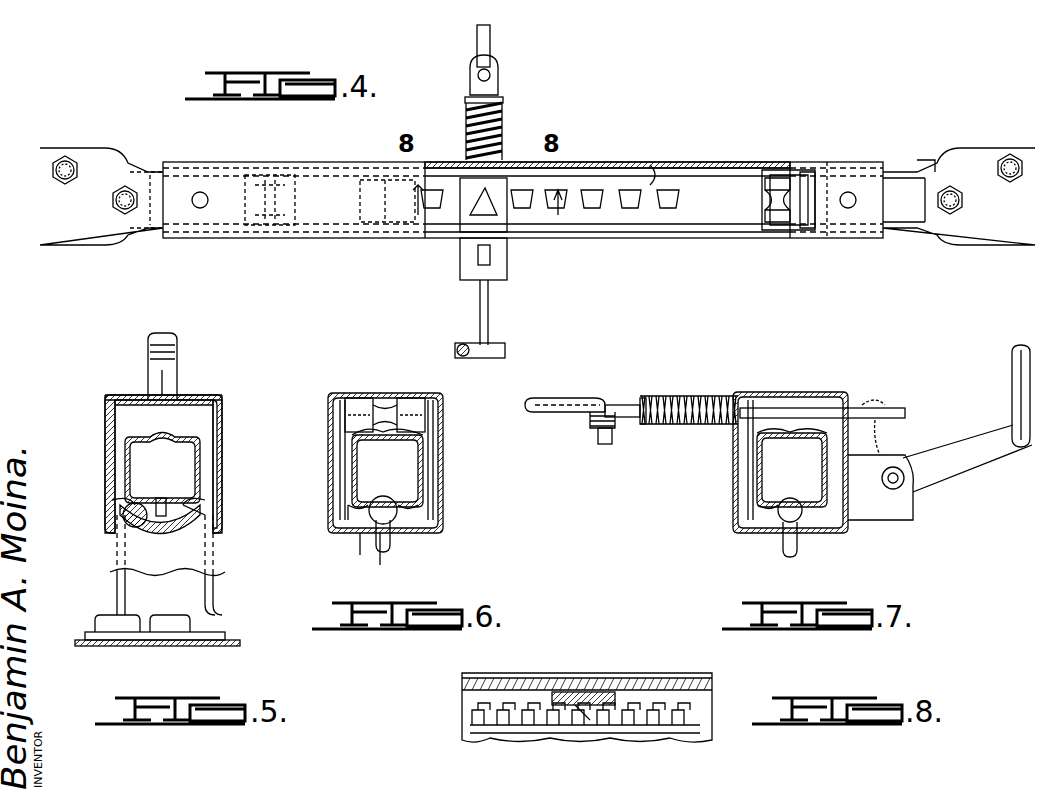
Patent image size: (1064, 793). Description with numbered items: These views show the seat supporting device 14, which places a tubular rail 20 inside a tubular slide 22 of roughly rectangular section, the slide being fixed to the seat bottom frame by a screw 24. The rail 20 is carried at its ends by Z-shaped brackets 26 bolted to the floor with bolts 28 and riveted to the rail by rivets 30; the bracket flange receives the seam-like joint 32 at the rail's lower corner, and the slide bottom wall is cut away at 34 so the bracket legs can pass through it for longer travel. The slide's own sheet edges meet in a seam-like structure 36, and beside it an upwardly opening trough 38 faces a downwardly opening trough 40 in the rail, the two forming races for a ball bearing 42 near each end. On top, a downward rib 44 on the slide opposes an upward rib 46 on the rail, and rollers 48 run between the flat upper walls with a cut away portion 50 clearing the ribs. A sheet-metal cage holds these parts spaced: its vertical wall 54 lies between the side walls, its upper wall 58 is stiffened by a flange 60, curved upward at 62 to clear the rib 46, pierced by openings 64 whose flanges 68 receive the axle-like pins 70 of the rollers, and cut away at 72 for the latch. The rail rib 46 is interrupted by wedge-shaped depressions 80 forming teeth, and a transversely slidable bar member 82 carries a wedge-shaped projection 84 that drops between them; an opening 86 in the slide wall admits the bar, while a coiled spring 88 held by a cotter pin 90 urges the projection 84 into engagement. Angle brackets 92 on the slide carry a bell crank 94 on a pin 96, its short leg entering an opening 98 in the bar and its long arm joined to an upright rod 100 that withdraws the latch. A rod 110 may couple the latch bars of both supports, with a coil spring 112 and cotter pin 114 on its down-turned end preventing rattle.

In FIG. 4, the supporting device 14 is at (159, 265).
In FIG. 4, the rail 20 is at (600, 180).
In FIG. 5, the rail 20 is at (212, 462).
In FIG. 6, the rail 20 is at (435, 474).
In FIG. 7, the rail 20 is at (805, 510).
In FIG. 4, the slide 22 is at (222, 240).
In FIG. 5, the slide 22 is at (222, 408).
In FIG. 6, the slide 22 is at (322, 412).
In FIG. 7, the slide 22 is at (828, 540).
In FIG. 8, the slide 22 is at (460, 668).
In FIG. 4, the screw 24 is at (205, 195).
In FIG. 5, the screw 24 is at (178, 355).
In FIG. 4, the bracket 26 is at (105, 240).
In FIG. 5, the bracket 26 is at (118, 580).
In FIG. 4, the bolt 28 is at (110, 205).
In FIG. 5, the rivet 30 is at (148, 522).
In FIG. 5, the seam-like joint 32 is at (118, 508).
In FIG. 6, the seam-like joint 32 is at (348, 510).
In FIG. 5, the cut away portion 34 is at (208, 535).
In FIG. 6, the seam-like structure 36 is at (360, 548).
In FIG. 7, the seam-like structure 36 is at (792, 558).
In FIG. 6, the trough or groove 38 is at (392, 540).
In FIG. 7, the trough or groove 38 is at (782, 511).
In FIG. 6, the groove or trough 40 is at (383, 496).
In FIG. 7, the groove or trough 40 is at (795, 488).
In FIG. 4, the ball bearing 42 is at (375, 240).
In FIG. 6, the ball bearing 42 is at (400, 508).
In FIG. 6, the rib or bead 44 is at (378, 398).
In FIG. 7, the rib or bead 44 is at (785, 398).
In FIG. 8, the rib or bead 44 is at (710, 675).
In FIG. 4, the bead or rib 46 is at (620, 185).
In FIG. 6, the bead or rib 46 is at (352, 455).
In FIG. 8, the bead or rib 46 is at (688, 705).
In FIG. 4, the roller 48 is at (310, 240).
In FIG. 6, the roller 48 is at (410, 398).
In FIG. 6, the cut away portion 50 is at (380, 403).
In FIG. 6, the vertical wall 54 is at (345, 478).
In FIG. 4, the horizontally extending wall portion 58 is at (712, 236).
In FIG. 6, the flange 60 is at (425, 437).
In FIG. 7, the flange 60 is at (792, 450).
In FIG. 4, the upwardly curved central portion 62 is at (660, 240).
In FIG. 4, the opening 64 is at (808, 175).
In FIG. 4, the flange 68 is at (775, 175).
In FIG. 6, the flange 68 is at (340, 405).
In FIG. 6, the axle-like pin or projection 70 is at (342, 415).
In FIG. 4, the cut away portion 72 is at (655, 172).
In FIG. 4, the depression 80 is at (552, 238).
In FIG. 8, the depression 80 is at (502, 705).
In FIG. 4, the bar member 82 is at (455, 265).
In FIG. 7, the bar member 82 is at (862, 408).
In FIG. 8, the bar member 82 is at (565, 692).
In FIG. 4, the projection 84 is at (450, 225).
In FIG. 7, the projection 84 is at (750, 465).
In FIG. 8, the projection 84 is at (585, 725).
In FIG. 7, the opening 86 is at (880, 418).
In FIG. 4, the coiled spring 88 is at (500, 130).
In FIG. 7, the coiled spring 88 is at (682, 396).
In FIG. 4, the cotter pin 90 is at (500, 98).
In FIG. 7, the cotter pin 90 is at (630, 398).
In FIG. 4, the angle bracket 92 is at (458, 275).
In FIG. 7, the angle bracket 92 is at (880, 522).
In FIG. 4, the bell crank 94 is at (490, 316).
In FIG. 7, the bell crank 94 is at (978, 470).
In FIG. 7, the pin or rivet 96 is at (905, 485).
In FIG. 4, the opening 98 is at (500, 255).
In FIG. 7, the opening 98 is at (885, 405).
In FIG. 4, the rod 100 is at (464, 343).
In FIG. 7, the rod 100 is at (1012, 380).
In FIG. 4, the rod 110 is at (490, 40).
In FIG. 7, the rod 110 is at (538, 400).
In FIG. 7, the coil spring 112 is at (588, 435).
In FIG. 7, the cotter pin 114 is at (604, 448).